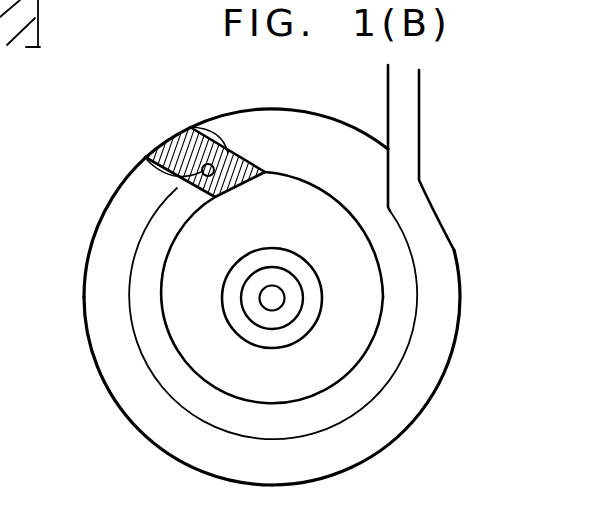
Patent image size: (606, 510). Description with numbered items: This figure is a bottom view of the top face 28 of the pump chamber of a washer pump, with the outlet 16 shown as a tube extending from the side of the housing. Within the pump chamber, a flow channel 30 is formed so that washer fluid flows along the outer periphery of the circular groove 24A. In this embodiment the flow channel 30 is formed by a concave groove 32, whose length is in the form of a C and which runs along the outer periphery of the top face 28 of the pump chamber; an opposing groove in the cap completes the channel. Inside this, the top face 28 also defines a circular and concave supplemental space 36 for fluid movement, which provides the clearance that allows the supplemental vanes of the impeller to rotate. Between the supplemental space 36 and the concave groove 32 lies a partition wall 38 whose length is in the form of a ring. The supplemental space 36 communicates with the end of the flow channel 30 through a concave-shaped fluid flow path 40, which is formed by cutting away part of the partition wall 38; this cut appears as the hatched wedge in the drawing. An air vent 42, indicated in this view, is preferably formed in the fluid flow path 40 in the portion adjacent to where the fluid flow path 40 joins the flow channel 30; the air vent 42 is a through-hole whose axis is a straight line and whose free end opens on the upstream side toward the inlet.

The outlet 16 is at (413, 120).
The circular groove 24A is at (87, 0).
The top face 28 is at (380, 266).
The flow channel 30 is at (107, 358).
The concave groove 32 is at (460, 297).
The supplemental space 36 is at (370, 337).
The partition wall 38 is at (163, 318).
The fluid flow path 40 is at (188, 127).
The air vent 42 is at (152, 165).